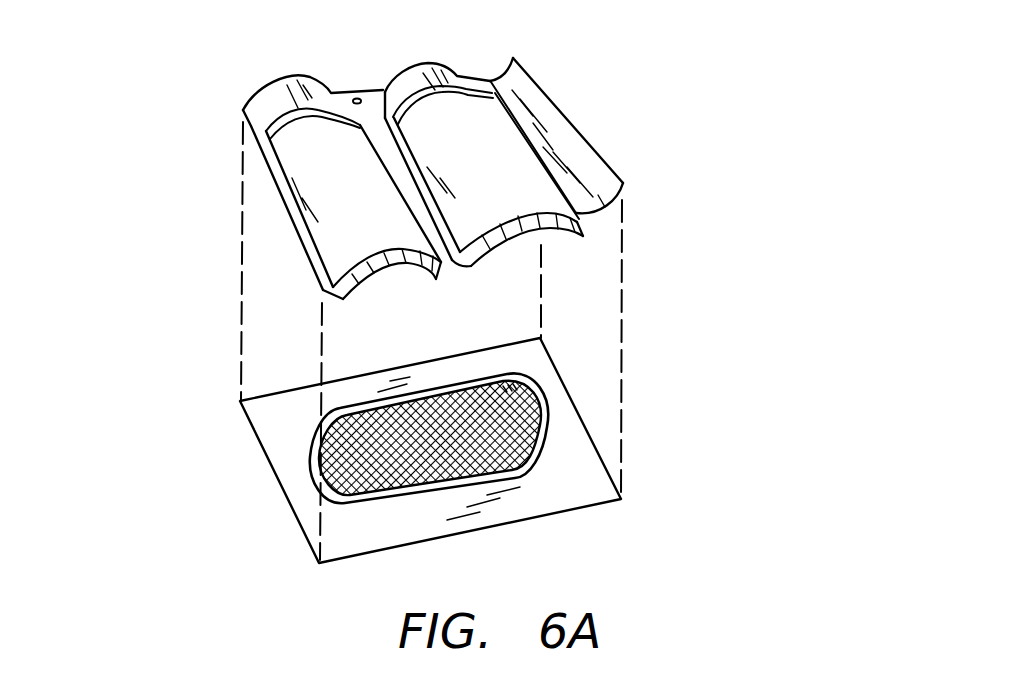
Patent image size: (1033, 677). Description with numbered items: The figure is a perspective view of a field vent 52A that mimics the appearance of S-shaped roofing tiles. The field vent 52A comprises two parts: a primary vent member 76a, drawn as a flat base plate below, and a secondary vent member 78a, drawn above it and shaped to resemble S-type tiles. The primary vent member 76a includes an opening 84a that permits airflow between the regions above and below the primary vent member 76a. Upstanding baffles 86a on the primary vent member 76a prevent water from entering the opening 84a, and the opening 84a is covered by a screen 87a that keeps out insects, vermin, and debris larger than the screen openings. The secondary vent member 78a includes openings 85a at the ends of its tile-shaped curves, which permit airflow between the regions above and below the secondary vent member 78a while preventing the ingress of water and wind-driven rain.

The field vent 52A is at (190, 126).
The secondary vent member 78a is at (563, 70).
The openings 85a is at (387, 283).
The primary vent member 76a is at (646, 379).
The opening 84a is at (380, 470).
The upstanding baffles 86a is at (423, 398).
The screen 87a is at (520, 466).